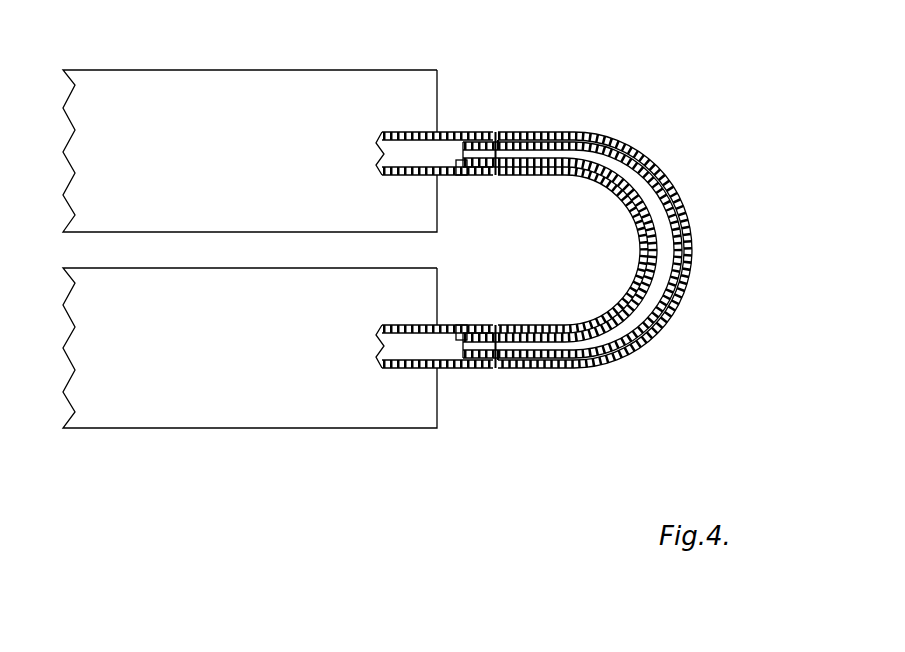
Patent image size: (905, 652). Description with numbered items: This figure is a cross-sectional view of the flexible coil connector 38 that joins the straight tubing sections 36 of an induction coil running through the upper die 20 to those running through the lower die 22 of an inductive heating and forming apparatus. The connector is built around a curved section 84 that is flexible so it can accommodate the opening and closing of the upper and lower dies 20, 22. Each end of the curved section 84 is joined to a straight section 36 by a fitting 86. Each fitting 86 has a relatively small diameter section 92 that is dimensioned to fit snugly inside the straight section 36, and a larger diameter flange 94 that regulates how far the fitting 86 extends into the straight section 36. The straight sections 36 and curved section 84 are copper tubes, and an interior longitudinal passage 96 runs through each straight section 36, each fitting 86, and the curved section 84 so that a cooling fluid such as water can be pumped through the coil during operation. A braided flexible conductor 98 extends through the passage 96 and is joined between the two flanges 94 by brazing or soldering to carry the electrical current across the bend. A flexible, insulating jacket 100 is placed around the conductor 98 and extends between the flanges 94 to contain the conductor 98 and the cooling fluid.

The upper die 20 is at (205, 167).
The lower die 22 is at (203, 369).
The straight tubing section 36 is at (402, 130).
The flexible coil connector 38 is at (637, 229).
The curved section 84 is at (637, 243).
The fitting 86 is at (498, 122).
The small diameter section 92 is at (472, 131).
The flange 94 is at (500, 132).
The interior longitudinal passage 96 is at (460, 176).
The braided flexible conductor 98 is at (590, 133).
The flexible insulating jacket 100 is at (693, 253).